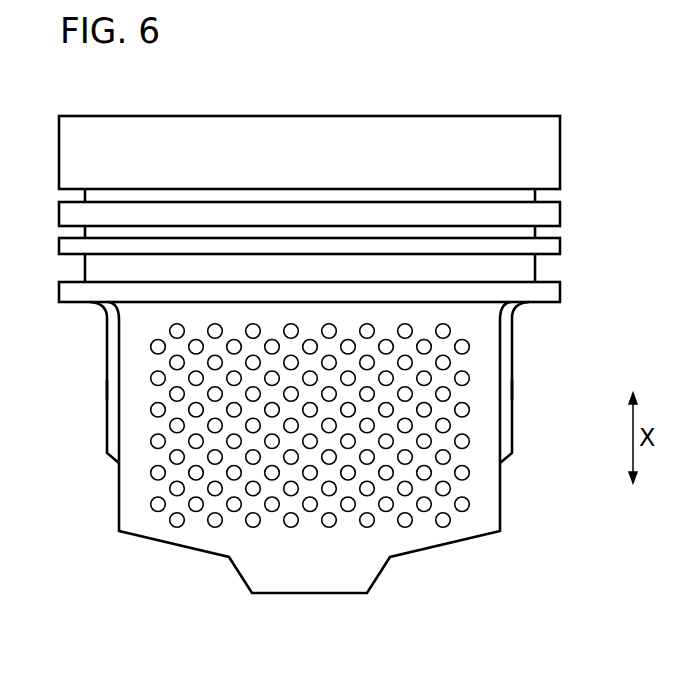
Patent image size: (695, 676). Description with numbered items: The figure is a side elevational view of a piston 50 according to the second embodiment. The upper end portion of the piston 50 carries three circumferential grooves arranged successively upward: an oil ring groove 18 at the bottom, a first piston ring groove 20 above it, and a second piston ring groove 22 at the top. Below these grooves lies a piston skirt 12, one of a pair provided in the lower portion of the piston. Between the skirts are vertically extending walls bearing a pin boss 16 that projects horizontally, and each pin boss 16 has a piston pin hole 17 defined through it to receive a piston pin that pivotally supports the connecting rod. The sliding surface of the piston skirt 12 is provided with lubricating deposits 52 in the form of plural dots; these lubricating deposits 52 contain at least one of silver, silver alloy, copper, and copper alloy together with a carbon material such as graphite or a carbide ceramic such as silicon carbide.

The piston 50 is at (204, 81).
The piston skirt 12 is at (483, 523).
The pin boss 16 is at (113, 433).
The piston pin hole 17 is at (112, 392).
The oil ring groove 18 is at (545, 255).
The first piston ring groove 20 is at (474, 225).
The second piston ring groove 22 is at (427, 189).
The lubricating deposits 52 is at (177, 331).